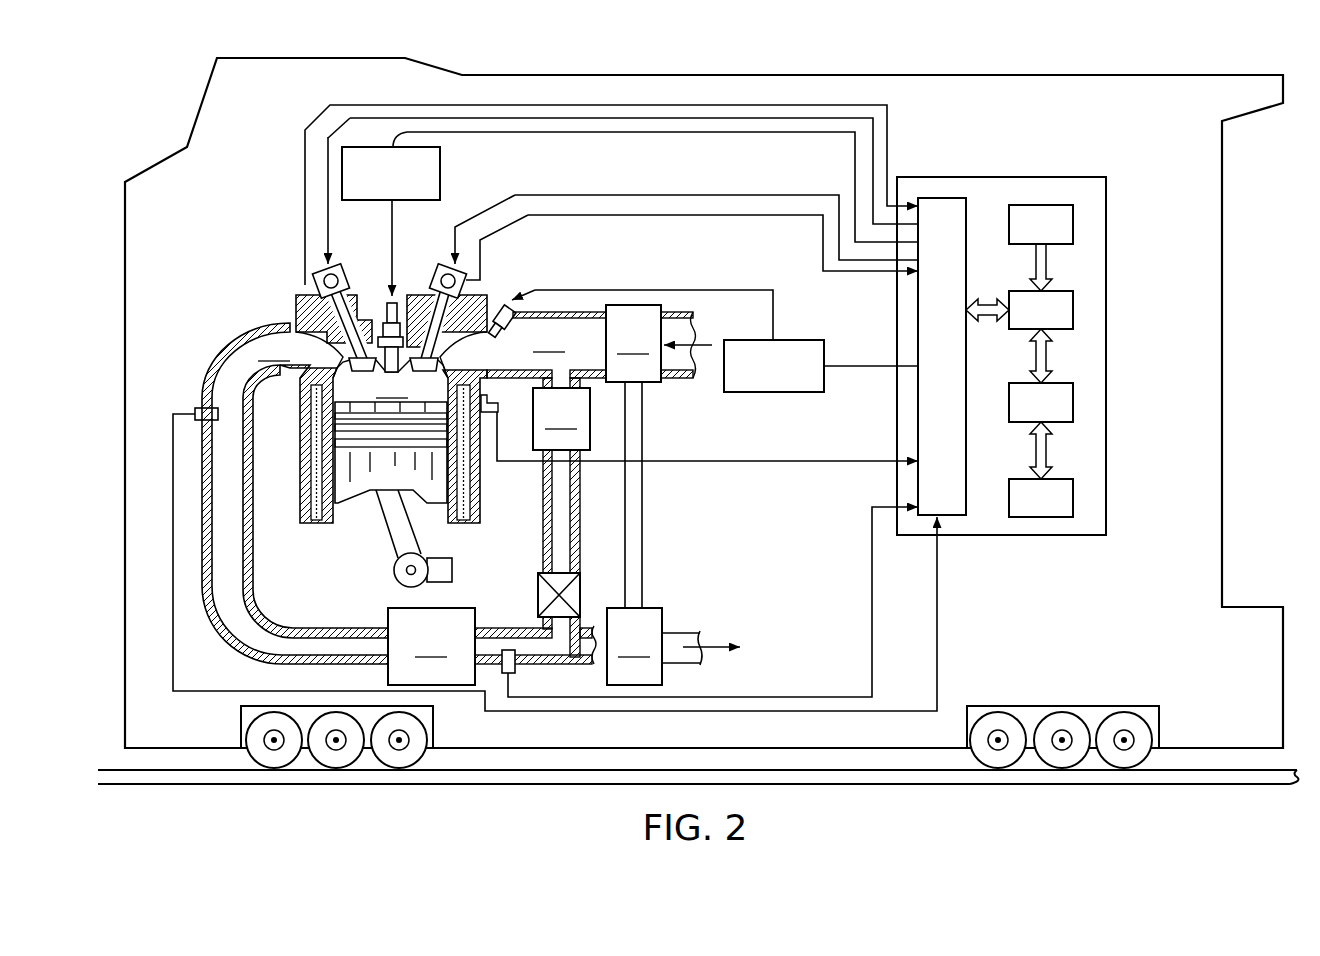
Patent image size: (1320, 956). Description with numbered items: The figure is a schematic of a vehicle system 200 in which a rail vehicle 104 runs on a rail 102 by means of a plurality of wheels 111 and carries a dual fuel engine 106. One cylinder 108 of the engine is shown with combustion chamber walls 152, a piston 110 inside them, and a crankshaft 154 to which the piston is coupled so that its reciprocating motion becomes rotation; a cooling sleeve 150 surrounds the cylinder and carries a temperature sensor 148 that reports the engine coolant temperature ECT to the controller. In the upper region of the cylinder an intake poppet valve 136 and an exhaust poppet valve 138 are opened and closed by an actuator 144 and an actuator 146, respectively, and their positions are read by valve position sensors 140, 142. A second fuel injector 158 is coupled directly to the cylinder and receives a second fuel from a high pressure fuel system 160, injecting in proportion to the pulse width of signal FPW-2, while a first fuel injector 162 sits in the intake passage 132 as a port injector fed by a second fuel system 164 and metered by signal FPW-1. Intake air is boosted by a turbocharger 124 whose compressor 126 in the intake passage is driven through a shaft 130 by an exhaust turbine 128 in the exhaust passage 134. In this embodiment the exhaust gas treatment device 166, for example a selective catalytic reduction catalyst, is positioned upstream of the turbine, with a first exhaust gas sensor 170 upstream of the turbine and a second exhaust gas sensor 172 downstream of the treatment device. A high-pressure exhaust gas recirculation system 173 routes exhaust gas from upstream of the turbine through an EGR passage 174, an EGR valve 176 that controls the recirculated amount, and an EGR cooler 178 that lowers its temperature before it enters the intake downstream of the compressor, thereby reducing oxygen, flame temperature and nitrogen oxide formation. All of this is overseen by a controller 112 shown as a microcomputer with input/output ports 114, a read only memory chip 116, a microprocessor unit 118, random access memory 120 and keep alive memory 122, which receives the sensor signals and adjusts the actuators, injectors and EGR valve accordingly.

The vehicle system 200 is at (163, 104).
The rail 102 is at (1142, 786).
The rail vehicle 104 is at (957, 74).
The engine 106 is at (240, 252).
The cylinder 108 is at (390, 379).
The piston 110 is at (375, 478).
The wheels 111 is at (420, 730).
The controller 112 is at (1100, 177).
The input/output ports 114 is at (946, 198).
The read only memory chip 116 is at (1075, 222).
The microprocessor unit 118 is at (1075, 308).
The random access memory 120 is at (1075, 402).
The keep alive memory 122 is at (1075, 497).
The turbocharger 124 is at (654, 527).
The compressor 126 is at (633, 343).
The exhaust turbine 128 is at (673, 646).
The shaft 130 is at (643, 480).
The intake passage 132 is at (599, 345).
The exhaust passage 134 is at (295, 493).
The intake poppet valve 136 is at (435, 351).
The exhaust poppet valve 138 is at (320, 340).
The valve position sensor 140 is at (468, 284).
The valve position sensor 142 is at (320, 286).
The actuator 144 is at (446, 268).
The actuator 146 is at (342, 268).
The temperature sensor 148 is at (489, 413).
The cooling sleeve 150 is at (468, 480).
The combustion chamber walls 152 is at (333, 523).
The crankshaft 154 is at (396, 580).
The second fuel injector 158 is at (396, 303).
The high pressure fuel system 160 is at (440, 182).
The first fuel injector 162 is at (505, 306).
The second fuel system 164 is at (818, 341).
The exhaust gas treatment device 166 is at (492, 646).
The first exhaust gas sensor 170 is at (196, 409).
The second exhaust gas sensor 172 is at (514, 672).
The exhaust gas recirculation system 173 is at (538, 522).
The EGR passage 174 is at (580, 552).
The EGR valve 176 is at (538, 593).
The EGR cooler 178 is at (561, 419).
The signal FPW-2 is at (508, 132).
The signal FPW-1 is at (886, 367).
The engine coolant temperature ECT is at (767, 460).